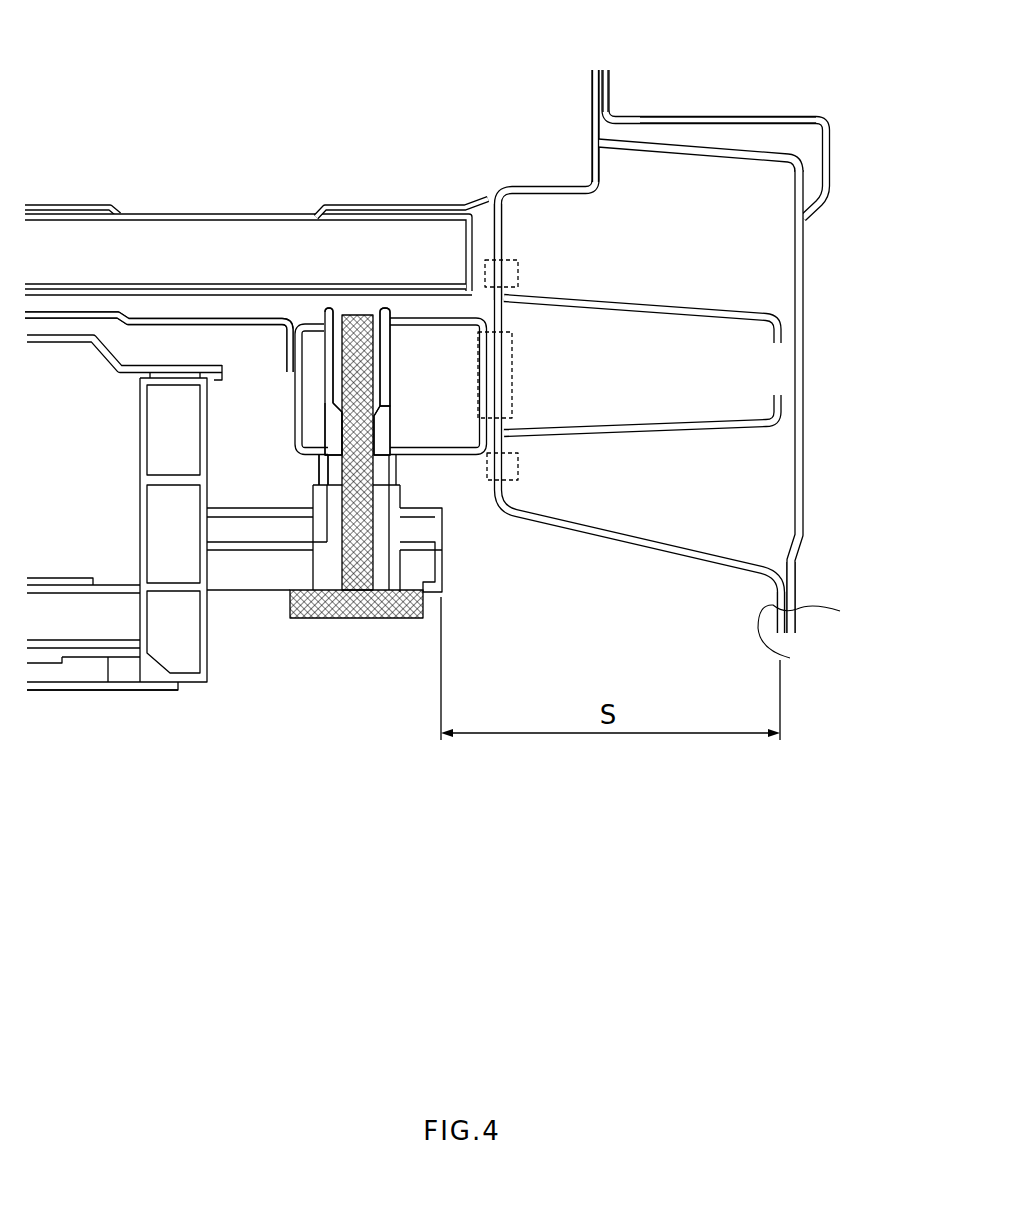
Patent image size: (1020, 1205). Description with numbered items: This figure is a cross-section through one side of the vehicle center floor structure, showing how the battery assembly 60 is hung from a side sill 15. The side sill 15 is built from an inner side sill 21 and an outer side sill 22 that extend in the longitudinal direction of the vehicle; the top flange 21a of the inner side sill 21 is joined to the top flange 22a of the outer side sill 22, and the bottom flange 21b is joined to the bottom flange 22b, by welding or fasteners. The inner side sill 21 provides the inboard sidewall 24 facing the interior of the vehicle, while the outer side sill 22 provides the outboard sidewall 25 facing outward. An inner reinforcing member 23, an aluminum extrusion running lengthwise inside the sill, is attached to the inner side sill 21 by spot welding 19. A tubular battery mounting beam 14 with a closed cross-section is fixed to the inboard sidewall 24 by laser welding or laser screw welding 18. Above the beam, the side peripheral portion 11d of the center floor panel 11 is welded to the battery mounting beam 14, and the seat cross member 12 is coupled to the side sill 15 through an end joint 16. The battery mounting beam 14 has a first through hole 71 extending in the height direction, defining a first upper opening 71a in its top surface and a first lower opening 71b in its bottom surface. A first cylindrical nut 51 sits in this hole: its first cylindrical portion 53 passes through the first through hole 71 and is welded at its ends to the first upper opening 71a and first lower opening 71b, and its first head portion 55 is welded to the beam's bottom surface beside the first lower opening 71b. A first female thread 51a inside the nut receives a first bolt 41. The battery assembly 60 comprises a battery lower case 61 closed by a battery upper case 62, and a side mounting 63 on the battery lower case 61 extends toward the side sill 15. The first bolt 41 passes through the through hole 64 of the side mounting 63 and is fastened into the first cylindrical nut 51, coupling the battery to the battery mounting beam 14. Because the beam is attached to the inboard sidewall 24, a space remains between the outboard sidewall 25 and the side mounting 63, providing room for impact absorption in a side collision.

The center floor panel 11 is at (157, 290).
The side peripheral portion 11d is at (175, 318).
The seat cross member 12 is at (272, 213).
The battery mounting beam 14 is at (440, 456).
The side sill 15 is at (724, 103).
The end joint 16 is at (392, 206).
The laser welding or laser screw welding 18 is at (513, 376).
The spot welding 19 is at (519, 467).
The inner side sill 21 is at (491, 512).
The top flange of inner side sill 21a is at (592, 120).
The bottom flange of inner side sill 21b is at (806, 655).
The outer side sill 22 is at (815, 467).
The top flange of outer side sill 22a is at (609, 76).
The bottom flange of outer side sill 22b is at (797, 608).
The inner reinforcing member 23 is at (657, 305).
The inboard sidewall 24 is at (493, 233).
The outboard sidewall 25 is at (805, 240).
The first bolt 41 is at (357, 604).
The first cylindrical nut 51 is at (240, 446).
The first female thread 51a is at (336, 394).
The first cylindrical portion 53 is at (326, 414).
The first head portion 55 is at (318, 468).
The battery assembly 60 is at (77, 703).
The battery lower case 61 is at (209, 678).
The battery upper case 62 is at (112, 352).
The side mounting 63 is at (247, 593).
The through hole 64 is at (389, 542).
The first through hole 71 is at (451, 368).
The first upper opening 71a is at (392, 335).
The first lower opening 71b is at (392, 440).